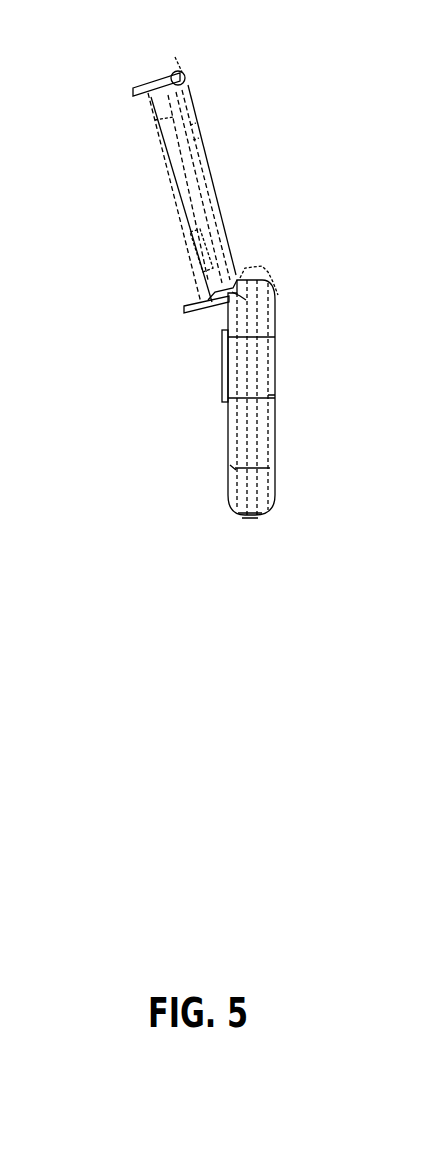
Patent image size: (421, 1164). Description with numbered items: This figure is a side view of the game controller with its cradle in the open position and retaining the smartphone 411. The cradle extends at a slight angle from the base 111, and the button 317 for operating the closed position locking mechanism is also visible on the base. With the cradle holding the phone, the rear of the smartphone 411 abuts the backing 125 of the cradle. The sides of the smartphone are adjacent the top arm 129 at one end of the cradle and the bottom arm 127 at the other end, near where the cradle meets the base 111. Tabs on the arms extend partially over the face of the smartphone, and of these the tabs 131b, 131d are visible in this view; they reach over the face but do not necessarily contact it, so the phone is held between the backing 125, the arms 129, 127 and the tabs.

The base 111 is at (238, 517).
The button 317 is at (247, 522).
The bottom arm 127 is at (208, 312).
The tab 131d is at (190, 312).
The backing 125 is at (203, 178).
The smartphone 411 is at (148, 117).
The tab 131b is at (140, 97).
The top arm 129 is at (153, 82).